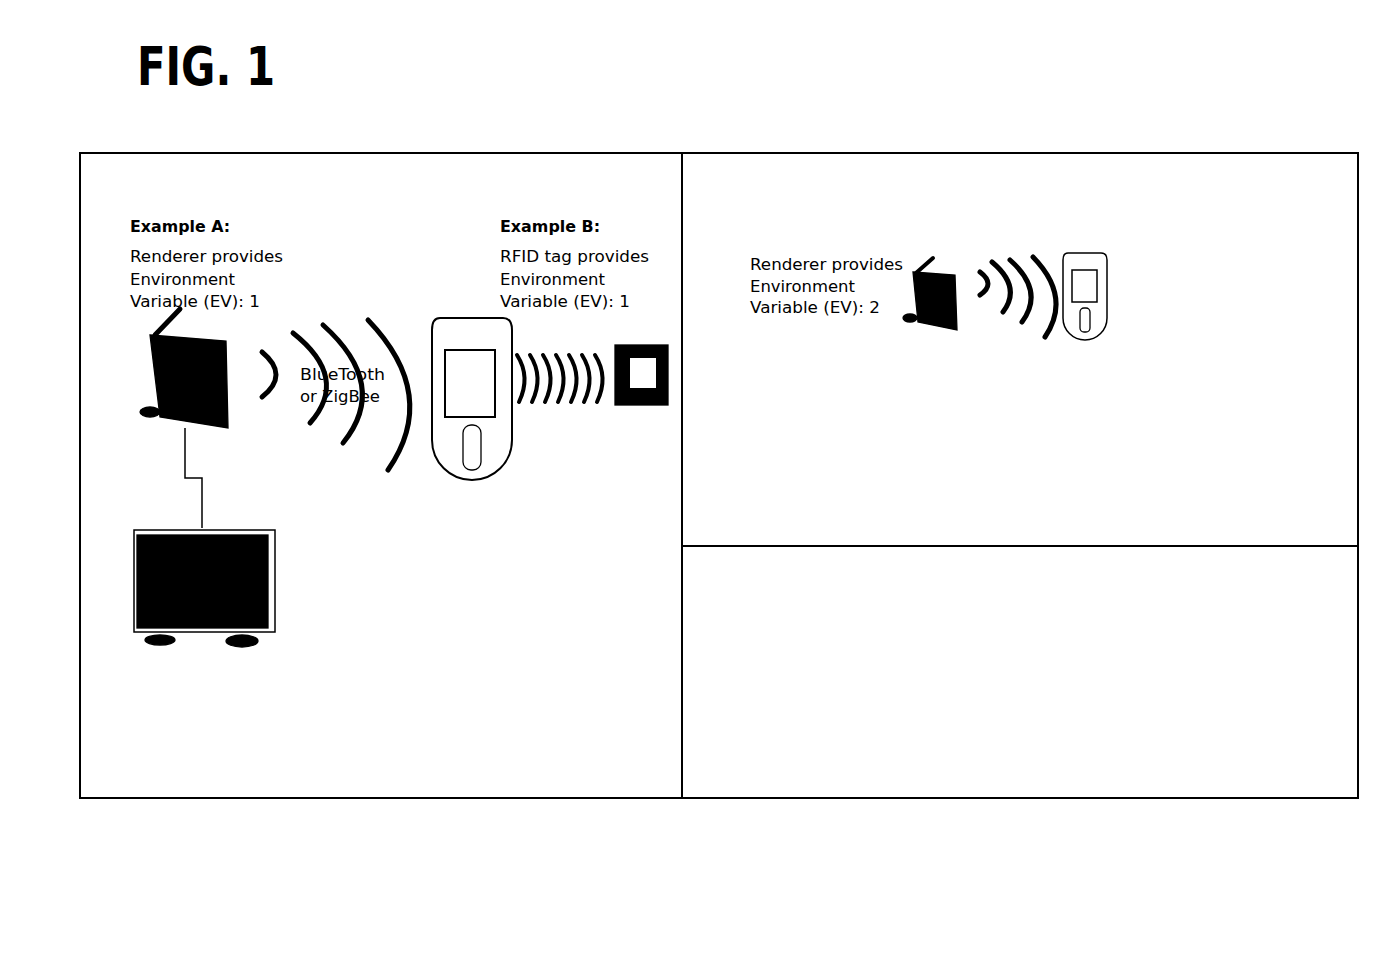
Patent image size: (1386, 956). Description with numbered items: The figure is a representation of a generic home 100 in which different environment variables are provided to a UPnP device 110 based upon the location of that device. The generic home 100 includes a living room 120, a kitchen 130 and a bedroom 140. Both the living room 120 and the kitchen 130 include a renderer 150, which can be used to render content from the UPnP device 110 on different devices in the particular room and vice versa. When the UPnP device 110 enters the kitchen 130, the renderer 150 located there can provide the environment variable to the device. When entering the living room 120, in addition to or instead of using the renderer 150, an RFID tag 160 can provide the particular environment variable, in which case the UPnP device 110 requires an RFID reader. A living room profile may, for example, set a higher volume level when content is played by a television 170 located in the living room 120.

The generic home 100 is at (719, 428).
The UPnP device 110 is at (792, 402).
The living room 120 is at (510, 197).
The kitchen 130 is at (1115, 196).
The bedroom 140 is at (1020, 672).
The renderer 150 is at (548, 370).
The RFID tag 160 is at (623, 407).
The television 170 is at (250, 537).